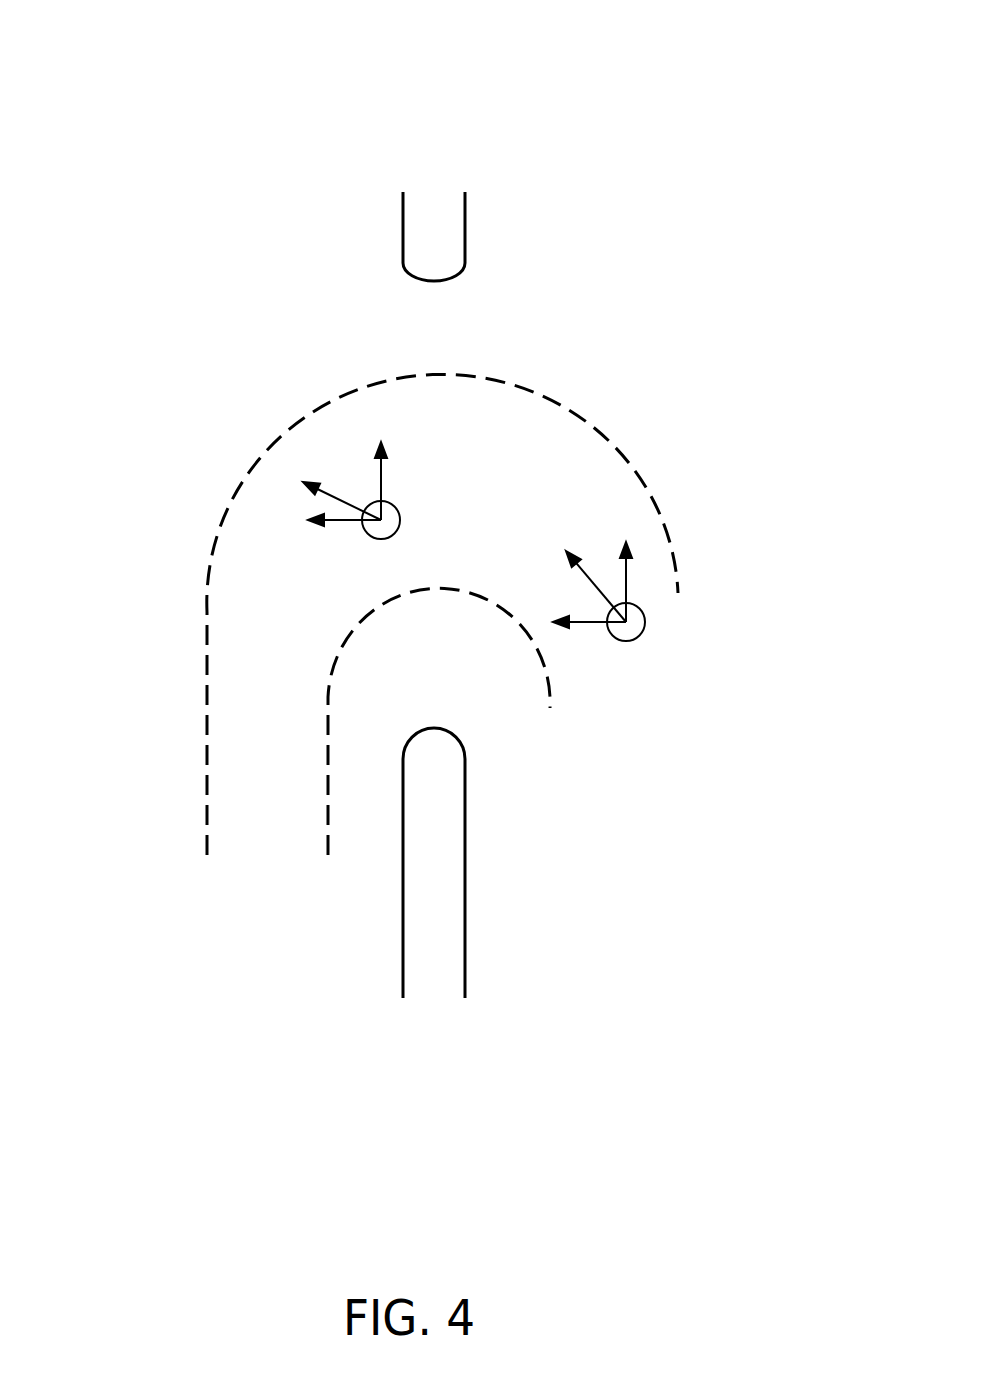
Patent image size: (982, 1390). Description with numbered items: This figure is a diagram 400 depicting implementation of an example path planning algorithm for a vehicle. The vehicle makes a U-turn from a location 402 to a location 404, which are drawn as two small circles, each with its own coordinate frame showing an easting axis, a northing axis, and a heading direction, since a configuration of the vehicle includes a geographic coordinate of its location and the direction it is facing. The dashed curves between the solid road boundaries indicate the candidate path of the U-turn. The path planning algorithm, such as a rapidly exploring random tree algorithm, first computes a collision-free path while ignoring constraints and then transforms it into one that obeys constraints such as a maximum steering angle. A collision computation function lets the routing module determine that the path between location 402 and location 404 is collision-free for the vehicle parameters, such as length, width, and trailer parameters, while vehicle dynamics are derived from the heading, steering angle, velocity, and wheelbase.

The diagram of vehicle path / turn 400 is at (106, 24).
The location 402 is at (639, 607).
The location 404 is at (394, 505).